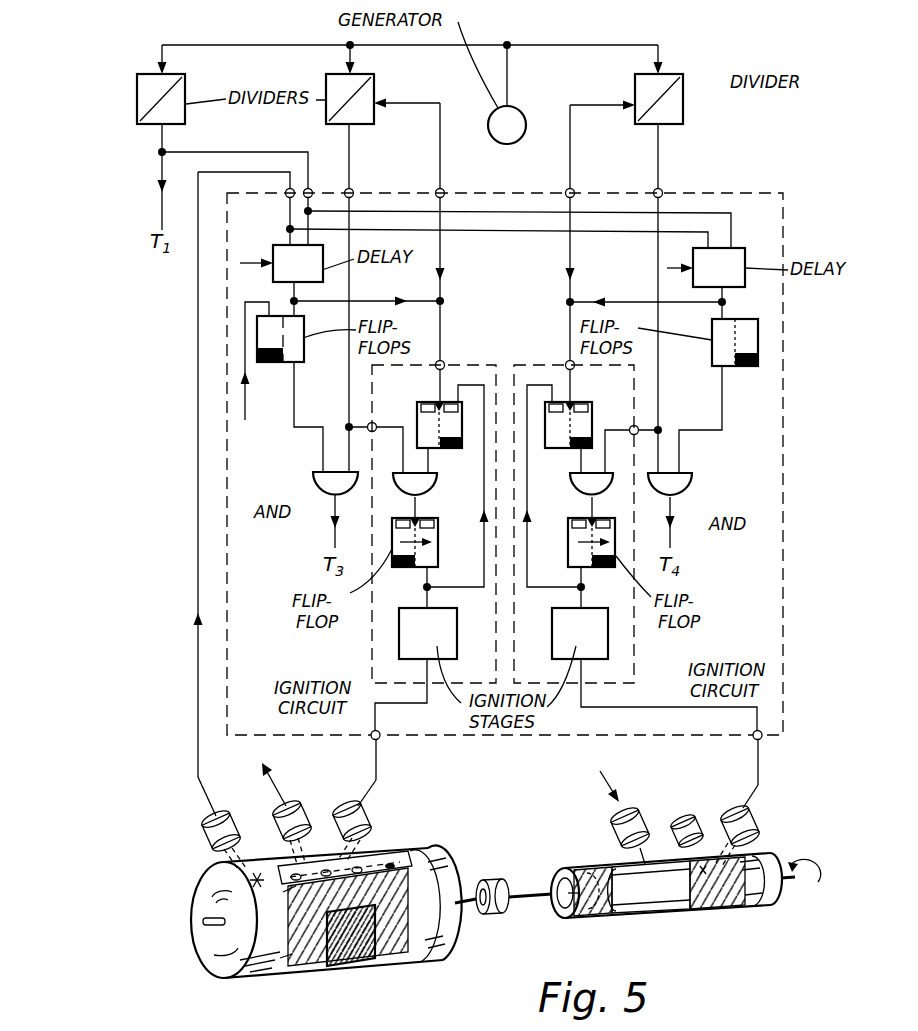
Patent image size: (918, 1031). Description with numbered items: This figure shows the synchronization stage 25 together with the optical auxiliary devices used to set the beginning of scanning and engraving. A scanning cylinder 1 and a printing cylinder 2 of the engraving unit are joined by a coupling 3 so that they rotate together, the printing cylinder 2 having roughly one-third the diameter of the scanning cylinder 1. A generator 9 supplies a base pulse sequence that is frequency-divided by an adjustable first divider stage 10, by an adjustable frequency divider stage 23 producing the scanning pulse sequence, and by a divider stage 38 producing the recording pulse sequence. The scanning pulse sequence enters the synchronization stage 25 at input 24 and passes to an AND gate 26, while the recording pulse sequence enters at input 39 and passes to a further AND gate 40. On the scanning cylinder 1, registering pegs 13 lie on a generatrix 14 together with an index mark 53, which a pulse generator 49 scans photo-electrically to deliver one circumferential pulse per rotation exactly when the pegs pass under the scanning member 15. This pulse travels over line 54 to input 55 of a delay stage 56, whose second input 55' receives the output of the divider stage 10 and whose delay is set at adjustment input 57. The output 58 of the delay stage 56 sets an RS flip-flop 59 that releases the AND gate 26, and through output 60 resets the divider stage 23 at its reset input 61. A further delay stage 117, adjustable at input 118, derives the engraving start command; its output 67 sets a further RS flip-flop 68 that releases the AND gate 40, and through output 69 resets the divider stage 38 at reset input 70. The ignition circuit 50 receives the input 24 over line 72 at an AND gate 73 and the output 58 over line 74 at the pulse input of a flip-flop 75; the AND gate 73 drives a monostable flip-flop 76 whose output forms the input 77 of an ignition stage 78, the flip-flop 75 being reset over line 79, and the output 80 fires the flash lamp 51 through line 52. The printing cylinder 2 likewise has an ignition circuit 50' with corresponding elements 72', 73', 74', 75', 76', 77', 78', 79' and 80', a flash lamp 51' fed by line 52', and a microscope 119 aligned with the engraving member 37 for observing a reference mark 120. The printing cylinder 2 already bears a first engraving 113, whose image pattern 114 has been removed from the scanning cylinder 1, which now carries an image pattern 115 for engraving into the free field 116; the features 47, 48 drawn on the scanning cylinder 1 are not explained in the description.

The scanning cylinder 1 is at (440, 944).
The printing cylinder 2 is at (757, 896).
The coupling 3 is at (492, 882).
The generator 9 is at (518, 107).
The first divider stage 10 is at (184, 91).
The registering pegs 13 is at (391, 862).
The generatrix 14 is at (426, 864).
The scanning member 15 is at (276, 809).
The frequency divider stage 23 is at (373, 91).
The input of synchronization stage 24 is at (353, 190).
The synchronization stage 25 is at (694, 203).
The AND gate 26 is at (318, 481).
The engraving member 37 is at (616, 827).
The divider stage 38 is at (684, 104).
The input of synchronization stage 39 is at (654, 190).
The AND gate 40 is at (688, 485).
The marking 47 is at (290, 889).
The marking 48 is at (286, 970).
The pulse generator 49 is at (207, 822).
The ignition circuit 50 is at (403, 524).
The ignition circuit 50' is at (597, 524).
The flash lamp 51 is at (346, 816).
The flash lamp 51' is at (734, 820).
The line 52 is at (396, 788).
The line 52' is at (773, 787).
The index mark 53 is at (258, 874).
The line 54 is at (198, 712).
The input of delay stage 55 is at (246, 182).
The second input of delay stage 55' is at (253, 192).
The delay stage 56 is at (290, 271).
The adjustment input 57 is at (274, 256).
The output of delay stage 58 is at (300, 284).
The RS flip-flop 59 is at (292, 356).
The output of synchronization stage 60 is at (444, 190).
The reset input 61 is at (384, 106).
The output of delay stage 67 is at (724, 298).
The RS flip-flop 68 is at (720, 356).
The output of synchronization stage 69 is at (567, 190).
The reset input 70 is at (632, 103).
The line 72 is at (374, 426).
The terminal 72' is at (631, 426).
The AND gate 73 is at (432, 495).
The AND gate 73' is at (573, 495).
The line 74 is at (391, 320).
The line 74' is at (621, 320).
The flip-flop 75 is at (448, 438).
The flip-flop 75' is at (561, 438).
The monostable flip-flop 76 is at (434, 546).
The flip-flop 76' is at (573, 546).
The input of ignition stage 77 is at (404, 587).
The line 77' is at (604, 587).
The ignition stage 78 is at (444, 642).
The ignition stage 78' is at (564, 642).
The line 79 is at (458, 486).
The feedback line 79' is at (552, 486).
The output of ignition stage 80 is at (399, 719).
The terminal 80' is at (692, 722).
The first engraving 113 is at (620, 906).
The image pattern 114 is at (405, 900).
The image pattern 115 is at (355, 945).
The field 116 is at (669, 893).
The delay stage 117 is at (735, 265).
The adjustment input 118 is at (675, 253).
The microscope 119 is at (683, 815).
The reference mark 120 is at (710, 906).